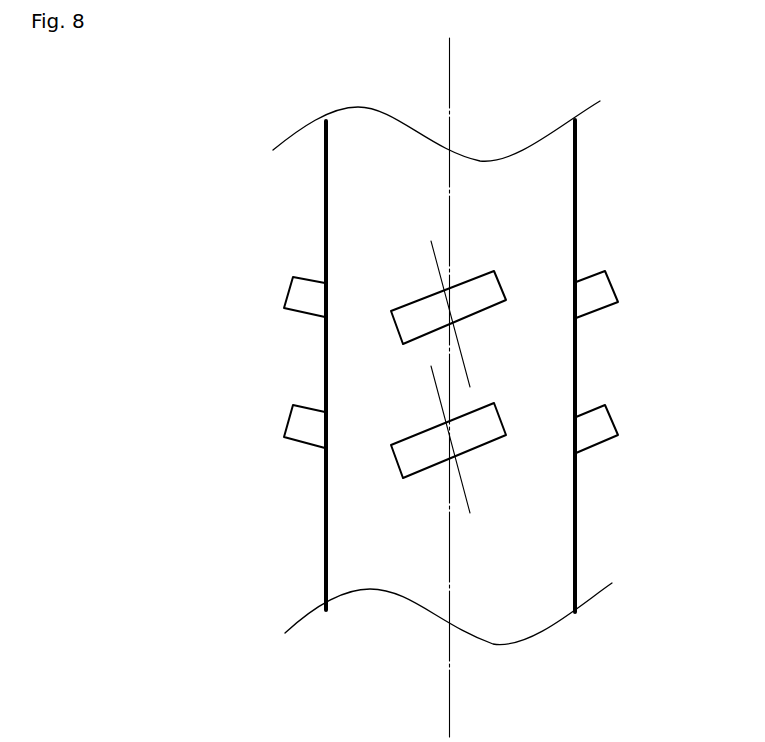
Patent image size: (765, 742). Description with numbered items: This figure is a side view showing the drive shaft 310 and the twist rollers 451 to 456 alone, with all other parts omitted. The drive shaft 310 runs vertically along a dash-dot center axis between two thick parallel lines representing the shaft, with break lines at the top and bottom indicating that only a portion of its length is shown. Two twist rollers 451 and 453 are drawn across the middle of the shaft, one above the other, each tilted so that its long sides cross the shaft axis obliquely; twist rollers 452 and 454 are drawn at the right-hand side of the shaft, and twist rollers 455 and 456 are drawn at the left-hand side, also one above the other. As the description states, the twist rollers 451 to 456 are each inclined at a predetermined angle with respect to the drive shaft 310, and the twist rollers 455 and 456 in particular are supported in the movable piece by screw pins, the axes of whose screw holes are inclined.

The drive shaft 310 is at (558, 170).
The twist roller 451 is at (475, 273).
The twist roller 452 is at (591, 272).
The twist roller 453 is at (482, 414).
The twist roller 454 is at (591, 411).
The twist roller 455 is at (305, 280).
The twist roller 456 is at (303, 417).